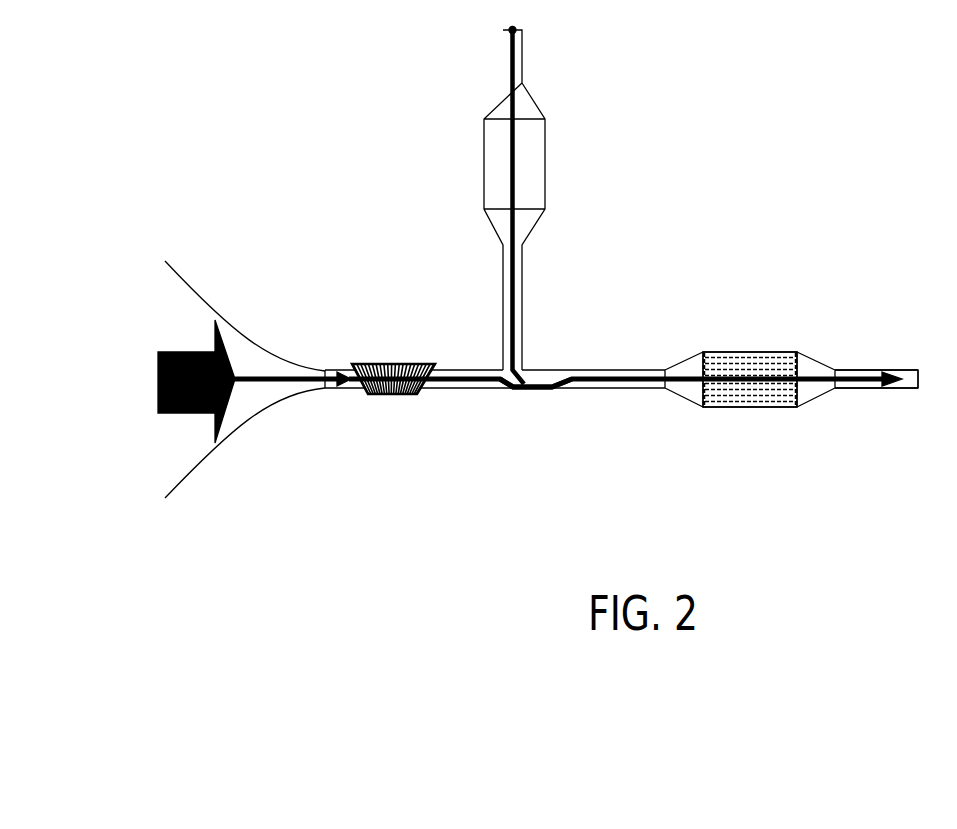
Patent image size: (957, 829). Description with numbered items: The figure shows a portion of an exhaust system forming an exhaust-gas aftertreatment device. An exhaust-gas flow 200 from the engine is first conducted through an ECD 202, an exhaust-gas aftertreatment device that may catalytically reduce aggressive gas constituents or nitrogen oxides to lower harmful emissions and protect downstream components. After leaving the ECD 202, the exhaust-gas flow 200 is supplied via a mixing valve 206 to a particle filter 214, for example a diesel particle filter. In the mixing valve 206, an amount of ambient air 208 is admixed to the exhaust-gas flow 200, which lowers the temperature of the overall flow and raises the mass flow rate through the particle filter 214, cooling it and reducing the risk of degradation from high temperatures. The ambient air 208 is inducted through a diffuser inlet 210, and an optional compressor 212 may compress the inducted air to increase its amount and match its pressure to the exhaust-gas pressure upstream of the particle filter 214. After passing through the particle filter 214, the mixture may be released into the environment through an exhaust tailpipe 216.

The exhaust-gas flow 200 is at (515, 53).
The ECD 202 is at (492, 160).
The mixing valve 206 is at (509, 371).
The ambient air 208 is at (267, 382).
The diffuser inlet 210 is at (217, 312).
The compressor 212 is at (408, 395).
The particle filter 214 is at (738, 352).
The exhaust tailpipe 216 is at (858, 370).